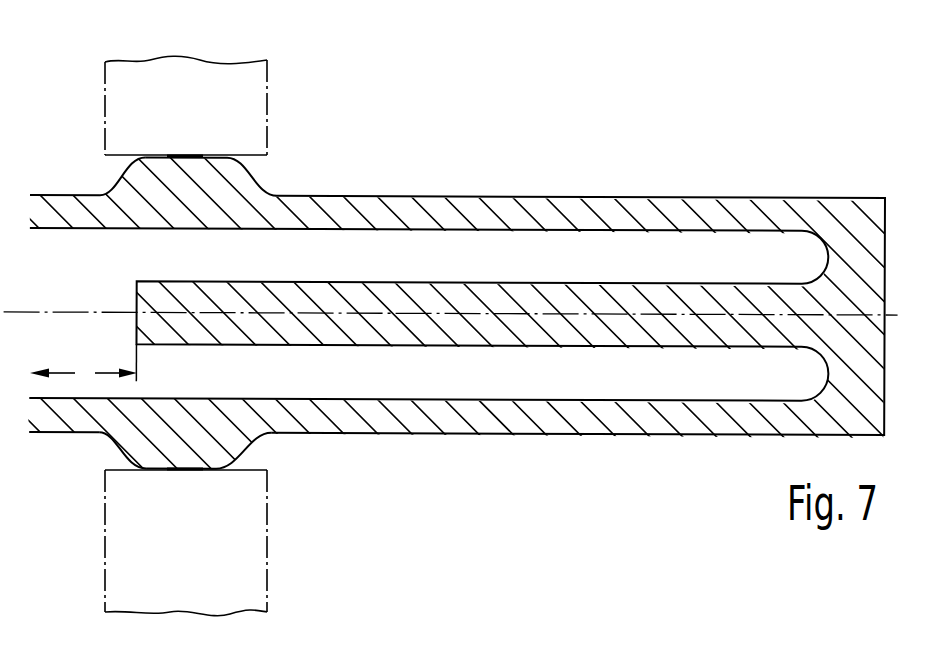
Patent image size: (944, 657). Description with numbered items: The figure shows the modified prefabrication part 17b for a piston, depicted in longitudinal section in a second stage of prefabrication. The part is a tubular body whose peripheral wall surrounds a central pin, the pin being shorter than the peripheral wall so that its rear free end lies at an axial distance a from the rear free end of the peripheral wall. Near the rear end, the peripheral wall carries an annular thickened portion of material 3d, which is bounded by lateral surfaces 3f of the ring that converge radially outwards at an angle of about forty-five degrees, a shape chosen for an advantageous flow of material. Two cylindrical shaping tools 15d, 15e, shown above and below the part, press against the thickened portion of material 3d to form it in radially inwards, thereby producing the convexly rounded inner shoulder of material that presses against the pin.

The modified prefabrication part 17b is at (537, 185).
The thickened portion of material 3d is at (243, 183).
The lateral surfaces of the ring 3f is at (118, 183).
The cylindrical shaping tool 15d is at (107, 82).
The cylindrical shaping tool 15e is at (114, 545).
The axial distance a is at (83, 373).